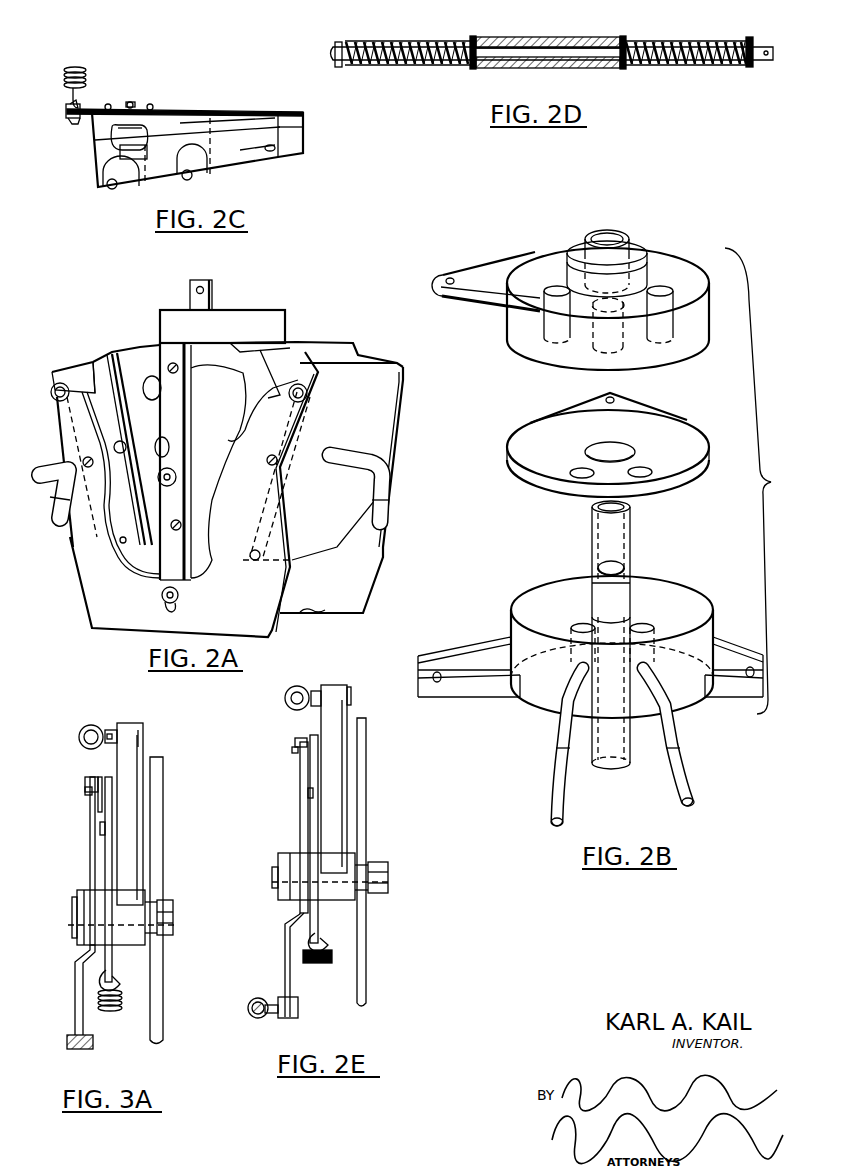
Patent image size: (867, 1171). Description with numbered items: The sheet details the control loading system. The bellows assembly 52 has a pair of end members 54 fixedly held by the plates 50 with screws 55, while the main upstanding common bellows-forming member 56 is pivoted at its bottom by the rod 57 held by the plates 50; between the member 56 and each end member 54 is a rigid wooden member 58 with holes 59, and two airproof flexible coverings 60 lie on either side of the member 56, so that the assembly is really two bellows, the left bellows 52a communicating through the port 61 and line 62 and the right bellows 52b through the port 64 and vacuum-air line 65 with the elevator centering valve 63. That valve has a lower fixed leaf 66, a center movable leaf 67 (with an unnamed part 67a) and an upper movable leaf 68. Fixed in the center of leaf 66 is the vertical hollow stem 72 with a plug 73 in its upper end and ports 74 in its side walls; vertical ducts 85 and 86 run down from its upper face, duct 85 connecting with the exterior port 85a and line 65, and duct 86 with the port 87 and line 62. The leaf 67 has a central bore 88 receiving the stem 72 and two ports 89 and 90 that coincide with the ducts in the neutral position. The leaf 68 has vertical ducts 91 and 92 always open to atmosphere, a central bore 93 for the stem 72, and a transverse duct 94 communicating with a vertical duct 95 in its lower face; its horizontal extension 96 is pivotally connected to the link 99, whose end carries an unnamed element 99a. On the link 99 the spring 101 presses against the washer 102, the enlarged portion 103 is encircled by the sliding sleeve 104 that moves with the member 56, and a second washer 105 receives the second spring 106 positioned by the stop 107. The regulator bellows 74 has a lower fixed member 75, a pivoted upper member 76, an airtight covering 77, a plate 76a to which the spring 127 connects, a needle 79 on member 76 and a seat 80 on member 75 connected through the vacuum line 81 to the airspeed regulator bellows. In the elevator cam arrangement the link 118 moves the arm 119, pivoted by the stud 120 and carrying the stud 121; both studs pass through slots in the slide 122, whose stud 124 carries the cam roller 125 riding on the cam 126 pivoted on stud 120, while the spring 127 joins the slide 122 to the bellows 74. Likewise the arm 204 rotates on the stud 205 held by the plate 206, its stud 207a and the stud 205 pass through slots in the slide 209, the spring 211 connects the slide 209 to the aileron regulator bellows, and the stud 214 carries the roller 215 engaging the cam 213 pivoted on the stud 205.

In FIG. 2A, the plates 50 is at (370, 542).
In FIG. 2A, the bellows 52 is at (317, 337).
In FIG. 2A, the left bellows 52a is at (75, 343).
In FIG. 2A, the right bellows 52b is at (372, 357).
In FIG. 2A, the end members 54 is at (62, 370).
In FIG. 2A, the screws 55 is at (56, 393).
In FIG. 2A, the common bellows-forming member 56 is at (253, 320).
In FIG. 2A, the rod 57 is at (178, 598).
In FIG. 2A, the rigid wooden member 58 is at (112, 355).
In FIG. 2A, the holes 59 is at (155, 438).
In FIG. 2A, the flexible coverings 60 is at (86, 368).
In FIG. 2A, the port 61 is at (52, 483).
In FIG. 2A, the line 62 is at (55, 512).
In FIG. 2B, the line 62 is at (568, 777).
In FIG. 2B, the elevator centering valve 63 is at (523, 706).
In FIG. 2A, the port 64 is at (372, 466).
In FIG. 2A, the vacuum-air line 65 is at (372, 505).
In FIG. 2B, the vacuum-air line 65 is at (677, 771).
In FIG. 2B, the lower fixed leaf 66 is at (690, 601).
In FIG. 2B, the center movable leaf 67 is at (695, 448).
In FIG. 2B, the tab 67a is at (622, 405).
In FIG. 2B, the upper movable leaf 68 is at (697, 318).
In FIG. 2B, the vertical hollow stem 72 is at (614, 533).
In FIG. 2C, the plug 73 is at (182, 165).
In FIG. 2B, the plug 73 is at (622, 510).
In FIG. 2C, the ports 74 is at (170, 106).
In FIG. 2B, the ports 74 is at (622, 563).
In FIG. 2C, the lower fixed member 75 is at (252, 150).
In FIG. 2C, the upper member 76 is at (207, 118).
In FIG. 2C, the plate 76a is at (82, 110).
In FIG. 2C, the flexible airtight covering 77 is at (222, 130).
In FIG. 2C, the needle 79 is at (133, 135).
In FIG. 2C, the seat 80 is at (141, 152).
In FIG. 2C, the vacuum line 81 is at (129, 170).
In FIG. 2B, the vertical duct 85 is at (654, 627).
In FIG. 2B, the exterior port 85a is at (670, 728).
In FIG. 2B, the vertical duct 86 is at (572, 627).
In FIG. 2B, the port 87 is at (563, 728).
In FIG. 2B, the central bore 88 is at (614, 450).
In FIG. 2B, the port 89 is at (646, 471).
In FIG. 2B, the port 90 is at (578, 472).
In FIG. 2B, the vertical duct 91 is at (665, 290).
In FIG. 2B, the vertical duct 92 is at (552, 285).
In FIG. 2B, the vertical bore 93 is at (607, 236).
In FIG. 2B, the transverse duct 94 is at (612, 300).
In FIG. 2B, the vertical duct 95 is at (614, 335).
In FIG. 2B, the horizontal extension 96 is at (470, 295).
In FIG. 2D, the link 99 is at (763, 58).
In FIG. 2D, the washer 99a is at (750, 38).
In FIG. 2D, the spring 101 is at (656, 44).
In FIG. 2D, the washer 102 is at (622, 38).
In FIG. 2D, the enlarged portion 103 is at (524, 58).
In FIG. 2D, the sliding sleeve 104 is at (495, 40).
In FIG. 2D, the second washer 105 is at (474, 38).
In FIG. 2D, the second spring 106 is at (383, 43).
In FIG. 2D, the stop 107 is at (339, 42).
In FIG. 2E, the link 118 is at (288, 702).
In FIG. 2E, the arm 119 is at (335, 722).
In FIG. 2E, the stud 120 is at (273, 880).
In FIG. 2E, the stud 121 is at (308, 795).
In FIG. 2E, the slide 122 is at (316, 918).
In FIG. 2E, the stud 124 is at (293, 752).
In FIG. 2E, the cam roller 125 is at (300, 740).
In FIG. 2E, the cam 126 is at (302, 777).
In FIG. 2C, the spring 127 is at (64, 72).
In FIG. 2E, the spring 127 is at (320, 963).
In FIG. 3A, the arm 204 is at (128, 760).
In FIG. 3A, the stud 205 is at (72, 918).
In FIG. 3A, the plate 206 is at (156, 953).
In FIG. 3A, the stud 207a is at (100, 828).
In FIG. 3A, the slide 209 is at (108, 873).
In FIG. 3A, the spring 211 is at (112, 1003).
In FIG. 3A, the cam 213 is at (93, 847).
In FIG. 3A, the stud 214 is at (100, 777).
In FIG. 3A, the roller 215 is at (92, 782).